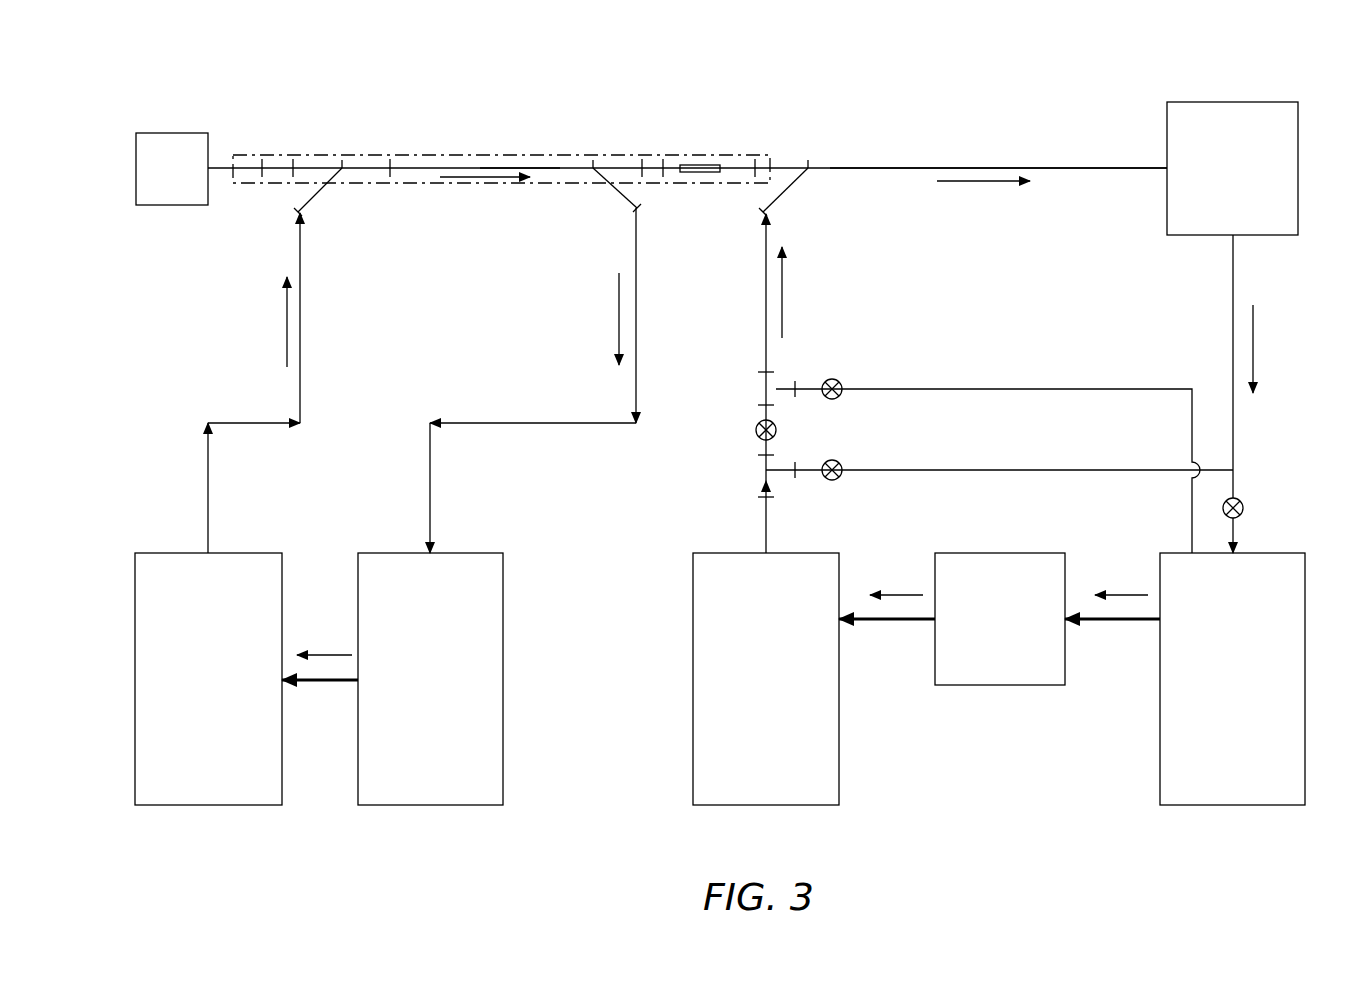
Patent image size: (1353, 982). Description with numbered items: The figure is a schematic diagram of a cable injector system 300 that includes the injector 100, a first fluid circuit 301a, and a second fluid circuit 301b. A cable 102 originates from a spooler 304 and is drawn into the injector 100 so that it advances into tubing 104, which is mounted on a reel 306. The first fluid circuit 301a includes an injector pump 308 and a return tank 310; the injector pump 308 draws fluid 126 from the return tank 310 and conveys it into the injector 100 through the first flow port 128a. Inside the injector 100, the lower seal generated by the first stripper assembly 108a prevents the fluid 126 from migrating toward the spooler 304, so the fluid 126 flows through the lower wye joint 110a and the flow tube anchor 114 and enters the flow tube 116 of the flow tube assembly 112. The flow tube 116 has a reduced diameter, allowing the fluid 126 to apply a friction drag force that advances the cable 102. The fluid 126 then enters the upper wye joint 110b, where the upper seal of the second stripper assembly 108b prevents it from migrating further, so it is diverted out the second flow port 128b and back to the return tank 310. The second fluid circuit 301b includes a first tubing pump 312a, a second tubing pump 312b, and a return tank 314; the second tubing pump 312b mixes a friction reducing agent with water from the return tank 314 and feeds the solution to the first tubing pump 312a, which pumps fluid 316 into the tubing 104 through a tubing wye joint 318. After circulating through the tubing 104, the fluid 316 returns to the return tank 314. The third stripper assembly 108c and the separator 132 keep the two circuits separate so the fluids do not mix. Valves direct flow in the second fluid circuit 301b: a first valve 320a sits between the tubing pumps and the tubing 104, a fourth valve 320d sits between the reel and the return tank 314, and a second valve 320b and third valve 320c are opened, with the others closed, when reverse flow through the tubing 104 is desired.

The injector 100 is at (320, 78).
The cable 102 is at (217, 170).
The tubing 104 is at (987, 168).
The first stripper assembly 108a is at (263, 168).
The second stripper assembly 108b is at (663, 168).
The third stripper assembly 108c is at (737, 168).
The lower wye joint 110a is at (317, 168).
The upper wye joint 110b is at (617, 168).
The flow tube assembly 112 is at (470, 150).
The flow tube anchor 114 is at (367, 168).
The flow tube 116 is at (493, 168).
The fluid 126 is at (480, 178).
The first flow port 128a is at (314, 193).
The second flow port 128b is at (616, 192).
The separator 132 is at (697, 173).
The cable injector system 300 is at (1062, 75).
The first fluid circuit 301a is at (207, 345).
The second fluid circuit 301b is at (708, 482).
The spooler 304 is at (155, 179).
The reel 306 is at (1215, 179).
The injector pump 308 is at (191, 689).
The return tank 310 is at (415, 689).
The first tubing pump 312a is at (745, 689).
The second tubing pump 312b is at (977, 631).
The return tank 314 is at (1215, 689).
The fluid 316 is at (980, 183).
The tubing wye joint 318 is at (790, 168).
The first valve 320a is at (756, 430).
The second valve 320b is at (842, 463).
The third valve 320c is at (842, 382).
The fourth valve 320d is at (1242, 500).